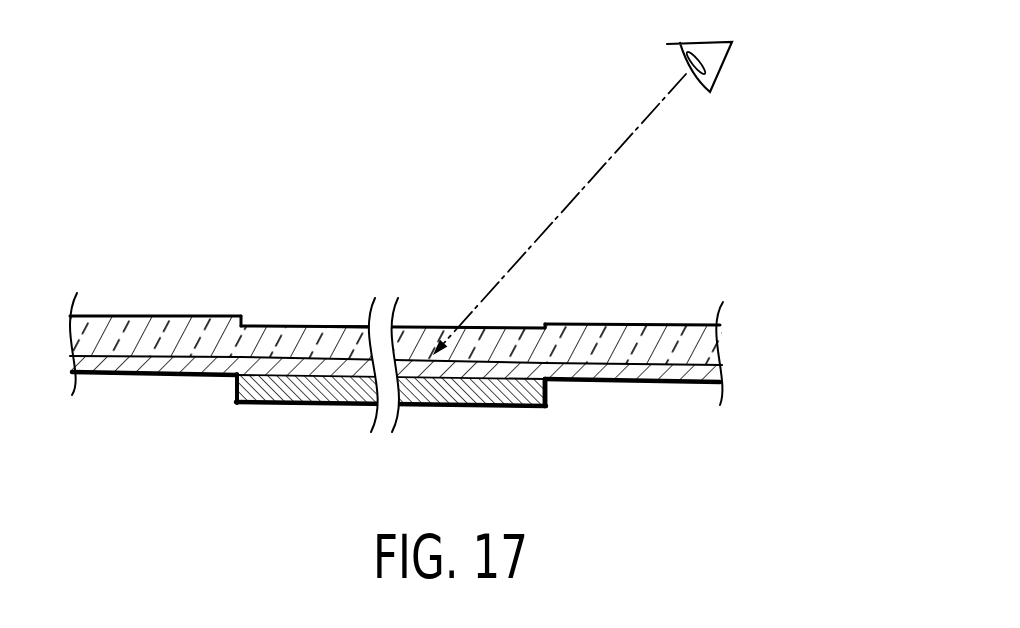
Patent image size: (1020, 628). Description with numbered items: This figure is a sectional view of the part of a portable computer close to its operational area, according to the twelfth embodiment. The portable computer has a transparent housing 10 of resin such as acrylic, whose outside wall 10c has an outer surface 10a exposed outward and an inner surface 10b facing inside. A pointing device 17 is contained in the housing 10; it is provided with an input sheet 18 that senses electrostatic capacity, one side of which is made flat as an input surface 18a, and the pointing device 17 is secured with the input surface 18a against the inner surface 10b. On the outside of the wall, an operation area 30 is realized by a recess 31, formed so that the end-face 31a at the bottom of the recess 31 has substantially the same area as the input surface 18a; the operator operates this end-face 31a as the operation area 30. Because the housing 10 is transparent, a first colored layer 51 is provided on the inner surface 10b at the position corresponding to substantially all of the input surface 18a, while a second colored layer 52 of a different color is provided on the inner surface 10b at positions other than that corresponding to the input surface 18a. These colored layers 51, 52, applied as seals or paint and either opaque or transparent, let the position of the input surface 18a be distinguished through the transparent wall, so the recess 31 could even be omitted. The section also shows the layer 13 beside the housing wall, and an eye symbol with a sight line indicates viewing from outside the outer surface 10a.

The housing 10 is at (610, 325).
The outer surface 10a is at (693, 324).
The inner surface 10b is at (688, 387).
The outside wall 10c is at (715, 359).
The first substrate 13 is at (130, 316).
The pointing device 17 is at (262, 407).
The input sheet 18 is at (340, 407).
The input surface 18a is at (521, 410).
The operation area 30 is at (312, 327).
The recess 31 is at (241, 316).
The end-face 31a is at (348, 327).
The first colored layer 51 is at (436, 410).
The second colored layer 52 is at (143, 374).